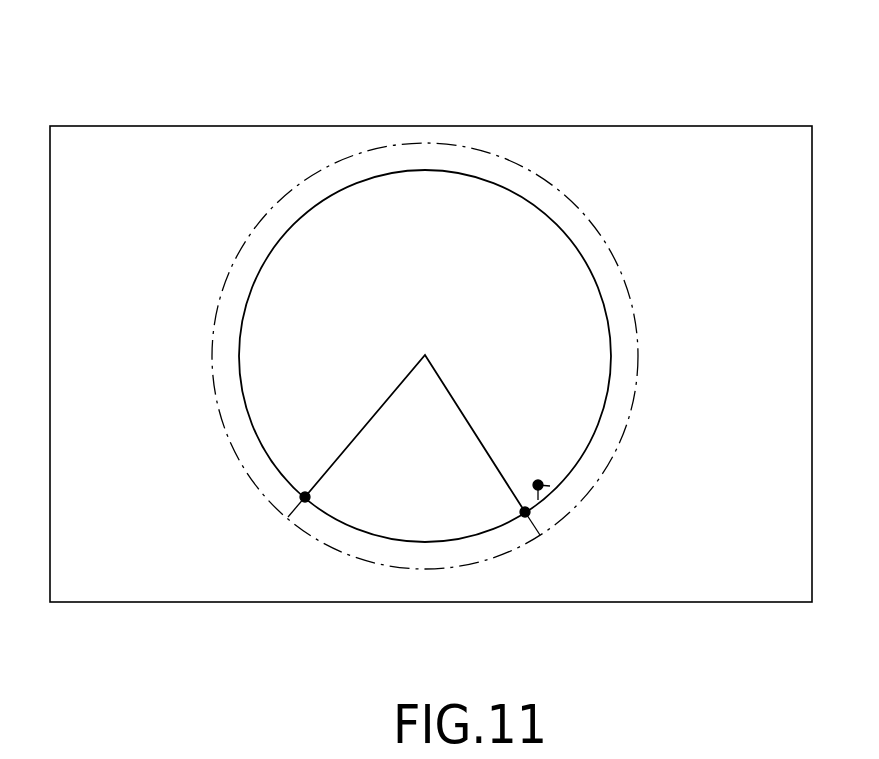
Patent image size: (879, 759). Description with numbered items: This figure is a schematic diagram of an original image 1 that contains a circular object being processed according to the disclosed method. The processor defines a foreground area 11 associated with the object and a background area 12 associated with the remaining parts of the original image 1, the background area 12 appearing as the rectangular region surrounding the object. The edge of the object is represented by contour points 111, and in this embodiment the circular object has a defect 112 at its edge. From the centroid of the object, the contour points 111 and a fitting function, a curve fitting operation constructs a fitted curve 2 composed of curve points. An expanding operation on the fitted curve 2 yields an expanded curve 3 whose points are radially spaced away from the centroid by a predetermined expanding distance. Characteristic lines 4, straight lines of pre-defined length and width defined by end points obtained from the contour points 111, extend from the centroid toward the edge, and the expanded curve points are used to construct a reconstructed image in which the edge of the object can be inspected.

The original image 1 is at (460, 95).
The fitted curve 2 is at (563, 228).
The expanded curve 3 is at (272, 207).
The characteristic lines 4 is at (337, 453).
The foreground area 11 is at (582, 350).
The background area 12 is at (732, 138).
The contour points 111 is at (305, 497).
The defect 112 is at (547, 493).